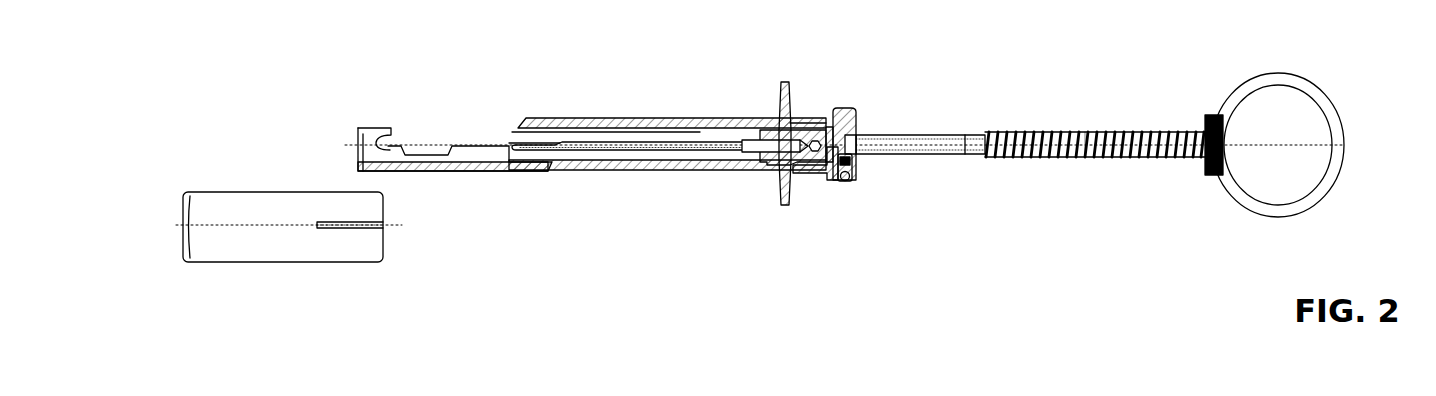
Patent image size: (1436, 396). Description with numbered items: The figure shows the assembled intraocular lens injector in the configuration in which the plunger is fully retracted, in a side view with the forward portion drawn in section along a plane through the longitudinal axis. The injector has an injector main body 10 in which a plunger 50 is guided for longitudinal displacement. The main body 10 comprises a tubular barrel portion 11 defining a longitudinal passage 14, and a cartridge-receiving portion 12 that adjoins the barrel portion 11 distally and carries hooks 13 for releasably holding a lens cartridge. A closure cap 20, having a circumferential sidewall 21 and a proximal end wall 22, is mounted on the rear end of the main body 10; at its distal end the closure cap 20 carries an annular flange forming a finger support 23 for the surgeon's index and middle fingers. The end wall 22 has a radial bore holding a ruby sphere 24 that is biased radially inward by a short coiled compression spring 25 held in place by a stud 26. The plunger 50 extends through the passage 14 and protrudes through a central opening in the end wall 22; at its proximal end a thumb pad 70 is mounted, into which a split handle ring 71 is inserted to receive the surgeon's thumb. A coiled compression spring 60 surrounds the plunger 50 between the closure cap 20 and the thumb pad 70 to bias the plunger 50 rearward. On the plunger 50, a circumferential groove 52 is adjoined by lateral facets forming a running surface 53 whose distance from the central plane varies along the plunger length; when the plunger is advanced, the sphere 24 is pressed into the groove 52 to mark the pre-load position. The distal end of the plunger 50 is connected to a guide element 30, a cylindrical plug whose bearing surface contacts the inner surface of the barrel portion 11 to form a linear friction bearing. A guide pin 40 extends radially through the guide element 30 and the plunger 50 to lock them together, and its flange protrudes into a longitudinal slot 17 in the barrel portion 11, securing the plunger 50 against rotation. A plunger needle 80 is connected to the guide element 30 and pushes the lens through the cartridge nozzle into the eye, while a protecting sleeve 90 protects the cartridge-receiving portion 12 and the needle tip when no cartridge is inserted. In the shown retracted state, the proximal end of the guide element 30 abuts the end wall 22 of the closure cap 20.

The injector main body 10 is at (545, 88).
The tubular barrel portion 11 is at (645, 126).
The cartridge-receiving portion 12 is at (450, 148).
The hooks 13 is at (376, 127).
The passage 14 is at (524, 133).
The longitudinal slot 17 is at (670, 168).
The closure cap 20 is at (871, 95).
The circumferential sidewall 21 is at (813, 124).
The proximal end wall 22 is at (852, 117).
The finger support 23 is at (782, 105).
The ruby sphere 24 is at (851, 163).
The coiled compression spring 25 is at (849, 180).
The stud 26 is at (845, 183).
The guide element 30 is at (777, 157).
The guide pin 40 is at (825, 174).
The plunger 50 is at (944, 136).
The circumferential groove 52 is at (975, 158).
The running surface 53 is at (1087, 160).
The coiled compression spring 60 is at (1040, 133).
The thumb pad 70 is at (1205, 128).
The split handle ring 71 is at (1325, 100).
The plunger needle 80 is at (697, 140).
The protecting sleeve 90 is at (279, 245).